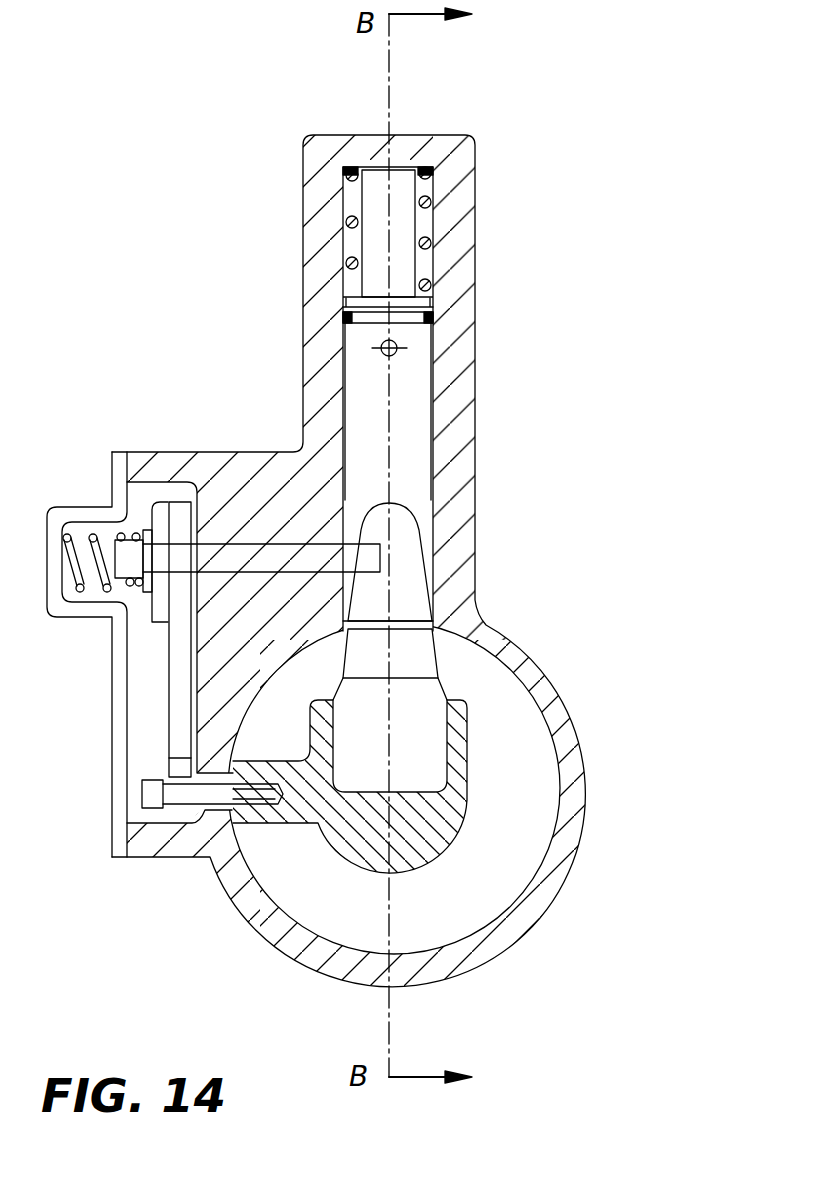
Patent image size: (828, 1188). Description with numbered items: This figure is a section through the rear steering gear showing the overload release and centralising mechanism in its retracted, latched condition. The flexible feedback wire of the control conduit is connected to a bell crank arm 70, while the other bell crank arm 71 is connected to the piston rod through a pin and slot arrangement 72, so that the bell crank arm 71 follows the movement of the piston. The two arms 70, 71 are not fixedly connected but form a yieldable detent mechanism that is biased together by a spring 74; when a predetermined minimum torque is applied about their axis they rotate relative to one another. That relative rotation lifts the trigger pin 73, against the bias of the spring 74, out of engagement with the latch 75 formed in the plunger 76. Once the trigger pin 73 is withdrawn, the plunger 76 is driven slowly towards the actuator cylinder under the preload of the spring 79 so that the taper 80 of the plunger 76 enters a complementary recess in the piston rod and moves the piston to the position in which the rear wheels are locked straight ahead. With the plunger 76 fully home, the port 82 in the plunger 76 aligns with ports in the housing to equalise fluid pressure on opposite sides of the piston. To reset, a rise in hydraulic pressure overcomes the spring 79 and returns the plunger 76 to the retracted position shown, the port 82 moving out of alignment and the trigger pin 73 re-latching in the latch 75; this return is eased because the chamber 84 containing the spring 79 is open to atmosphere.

The bell crank arm 70 is at (162, 513).
The bell crank arm 71 is at (177, 683).
The pin and slot arrangement 72 is at (160, 781).
The trigger pin 73 is at (213, 552).
The spring 74 is at (80, 533).
The latch 75 is at (388, 492).
The plunger 76 is at (408, 405).
The spring 79 is at (430, 212).
The taper 80 is at (407, 582).
The port 82 is at (440, 321).
The chamber 84 is at (430, 226).